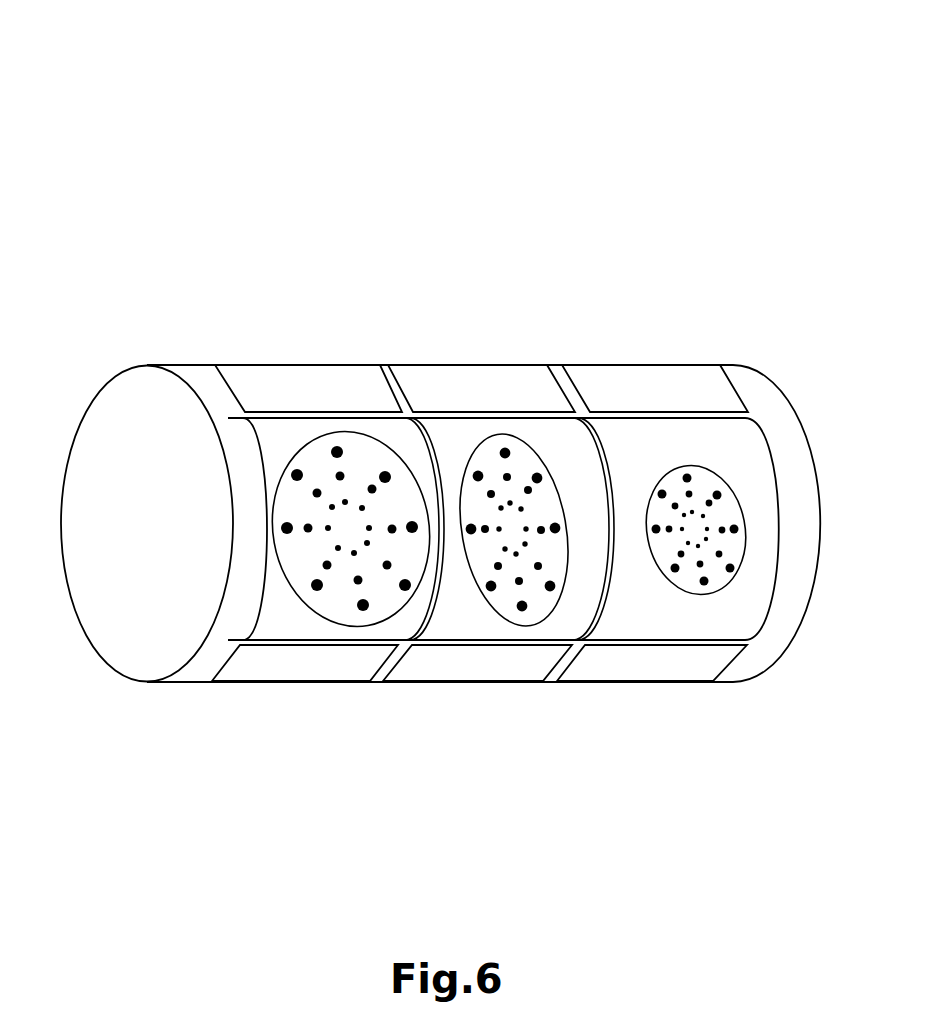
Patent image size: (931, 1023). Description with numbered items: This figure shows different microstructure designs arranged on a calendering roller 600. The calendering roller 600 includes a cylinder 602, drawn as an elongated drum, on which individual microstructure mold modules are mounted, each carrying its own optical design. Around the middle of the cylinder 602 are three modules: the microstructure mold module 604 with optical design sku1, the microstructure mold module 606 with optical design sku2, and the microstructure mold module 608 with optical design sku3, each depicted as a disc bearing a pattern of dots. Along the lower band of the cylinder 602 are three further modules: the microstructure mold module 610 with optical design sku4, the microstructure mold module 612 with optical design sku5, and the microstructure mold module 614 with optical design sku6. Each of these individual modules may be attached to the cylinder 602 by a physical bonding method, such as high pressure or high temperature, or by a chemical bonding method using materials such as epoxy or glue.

The calendering roller 600 is at (116, 48).
The cylinder 602 is at (99, 470).
The microstructure mold module 604 is at (297, 428).
The microstructure mold module 606 is at (517, 432).
The microstructure mold module 608 is at (695, 432).
The microstructure mold module 610 is at (262, 660).
The microstructure mold module 612 is at (428, 660).
The microstructure mold module 614 is at (598, 680).